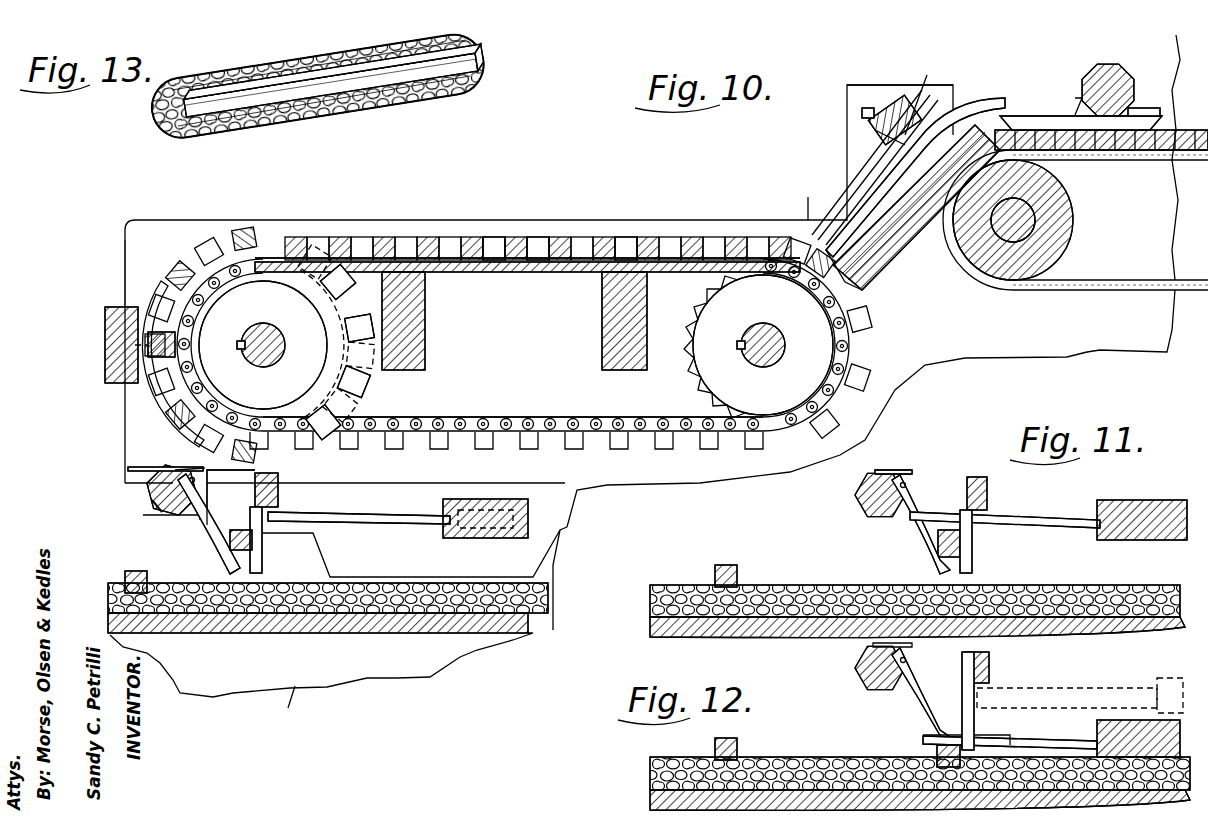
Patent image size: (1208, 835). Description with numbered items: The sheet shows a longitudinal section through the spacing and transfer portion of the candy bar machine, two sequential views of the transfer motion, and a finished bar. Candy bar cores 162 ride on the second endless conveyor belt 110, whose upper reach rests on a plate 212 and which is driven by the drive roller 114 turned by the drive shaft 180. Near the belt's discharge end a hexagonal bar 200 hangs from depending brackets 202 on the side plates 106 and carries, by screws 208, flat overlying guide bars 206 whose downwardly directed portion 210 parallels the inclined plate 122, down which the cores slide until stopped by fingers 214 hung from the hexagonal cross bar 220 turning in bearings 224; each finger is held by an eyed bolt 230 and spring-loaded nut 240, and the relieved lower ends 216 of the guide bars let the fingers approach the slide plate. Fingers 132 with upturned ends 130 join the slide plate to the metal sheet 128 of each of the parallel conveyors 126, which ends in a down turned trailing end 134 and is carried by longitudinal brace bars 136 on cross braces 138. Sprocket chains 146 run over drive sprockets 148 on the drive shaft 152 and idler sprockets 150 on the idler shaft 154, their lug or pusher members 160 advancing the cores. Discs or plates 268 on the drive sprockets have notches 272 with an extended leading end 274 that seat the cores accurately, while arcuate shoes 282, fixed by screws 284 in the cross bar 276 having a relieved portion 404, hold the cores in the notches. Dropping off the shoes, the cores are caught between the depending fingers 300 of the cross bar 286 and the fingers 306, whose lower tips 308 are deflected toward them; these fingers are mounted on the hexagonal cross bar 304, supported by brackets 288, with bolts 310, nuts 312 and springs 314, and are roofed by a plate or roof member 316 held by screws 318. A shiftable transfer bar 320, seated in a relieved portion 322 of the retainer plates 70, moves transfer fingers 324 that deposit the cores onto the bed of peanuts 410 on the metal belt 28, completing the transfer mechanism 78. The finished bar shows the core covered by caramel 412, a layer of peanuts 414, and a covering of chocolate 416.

In FIG. 10, the metal belt 28 is at (393, 640).
In FIG. 11, the metal belt 28 is at (650, 628).
In FIG. 12, the metal belt 28 is at (650, 800).
In FIG. 10, the retainer plates 70 is at (290, 709).
In FIG. 10, the transfer mechanism 78 is at (124, 412).
In FIG. 10, the side plates 106 is at (398, 238).
In FIG. 10, the second endless conveyor belt 110 is at (1128, 290).
In FIG. 10, the drive roller 114 is at (1060, 250).
In FIG. 10, the inclined plate 122 is at (900, 240).
In FIG. 10, the parallel conveyors 126 is at (493, 247).
In FIG. 10, the metal sheet 128 is at (538, 237).
In FIG. 10, the upturned ends 130 is at (850, 285).
In FIG. 10, the fingers 132 is at (840, 278).
In FIG. 10, the down turned trailing end 134 is at (252, 322).
In FIG. 10, the longitudinal brace bars 136 is at (626, 237).
In FIG. 10, the cross braces 138 is at (425, 340).
In FIG. 10, the sprocket chains 146 is at (660, 428).
In FIG. 10, the drive sprockets 148 is at (375, 375).
In FIG. 10, the idler sprockets 150 is at (705, 370).
In FIG. 10, the drive shaft 152 is at (265, 362).
In FIG. 10, the idler shaft 154 is at (768, 362).
In FIG. 10, the lug or pusher member 160 is at (450, 237).
In FIG. 13, the candy bar cores 162 is at (470, 48).
In FIG. 10, the candy bar cores 162 is at (240, 240).
In FIG. 11, the candy bar cores 162 is at (726, 565).
In FIG. 12, the candy bar cores 162 is at (726, 738).
In FIG. 10, the drive shaft 180 is at (1035, 218).
In FIG. 10, the hexagonal bar 200 is at (1118, 64).
In FIG. 10, the depending brackets 202 is at (1140, 108).
In FIG. 10, the flat overlying guide bars 206 is at (1030, 116).
In FIG. 10, the screws 208 is at (1076, 95).
In FIG. 10, the downwardly directed portion 210 is at (915, 95).
In FIG. 10, the plate 212 is at (1150, 152).
In FIG. 10, the fingers 214 is at (870, 185).
In FIG. 10, the relieved lower ends 216 is at (880, 178).
In FIG. 10, the hexagonal cross bar 220 is at (890, 100).
In FIG. 10, the bearings 224 is at (940, 80).
In FIG. 10, the bolt 230 is at (875, 128).
In FIG. 10, the nut 240 is at (862, 113).
In FIG. 10, the discs or plates 268 is at (262, 255).
In FIG. 10, the notches 272 is at (335, 295).
In FIG. 10, the extended leading end 274 is at (300, 450).
In FIG. 10, the cross bar 276 is at (105, 330).
In FIG. 10, the arcuate shoes 282 is at (148, 380).
In FIG. 10, the screws 284 is at (105, 350).
In FIG. 10, the cross bar 286 is at (278, 490).
In FIG. 11, the cross bar 286 is at (977, 477).
In FIG. 12, the cross bar 286 is at (989, 660).
In FIG. 10, the brackets 288 is at (231, 497).
In FIG. 10, the depending fingers 300 is at (262, 562).
In FIG. 11, the depending fingers 300 is at (972, 565).
In FIG. 12, the depending fingers 300 is at (974, 718).
In FIG. 10, the hexagonal cross bar 304 is at (146, 488).
In FIG. 11, the hexagonal cross bar 304 is at (855, 498).
In FIG. 12, the hexagonal cross bar 304 is at (855, 670).
In FIG. 10, the fingers 306 is at (205, 520).
In FIG. 11, the fingers 306 is at (925, 550).
In FIG. 12, the fingers 306 is at (950, 690).
In FIG. 10, the lower tips 308 is at (236, 574).
In FIG. 10, the bolts 310 is at (190, 476).
In FIG. 10, the nuts 312 is at (152, 504).
In FIG. 10, the springs 314 is at (143, 517).
In FIG. 10, the plate or roof member 316 is at (218, 462).
In FIG. 11, the plate or roof member 316 is at (912, 472).
In FIG. 10, the screws 318 is at (128, 469).
In FIG. 10, the shiftable transfer bar 320 is at (528, 516).
In FIG. 11, the shiftable transfer bar 320 is at (1110, 500).
In FIG. 12, the shiftable transfer bar 320 is at (1140, 720).
In FIG. 10, the relieved portion 322 is at (330, 572).
In FIG. 10, the transfer fingers 324 is at (400, 516).
In FIG. 11, the transfer fingers 324 is at (1020, 518).
In FIG. 12, the transfer fingers 324 is at (1060, 735).
In FIG. 10, the relieved portion 404 is at (112, 300).
In FIG. 10, the bed of peanuts 410 is at (258, 635).
In FIG. 11, the bed of peanuts 410 is at (778, 585).
In FIG. 12, the bed of peanuts 410 is at (775, 757).
In FIG. 13, the caramel 412 is at (425, 82).
In FIG. 13, the layer of peanuts 414 is at (348, 62).
In FIG. 13, the covering of chocolate 416 is at (272, 72).